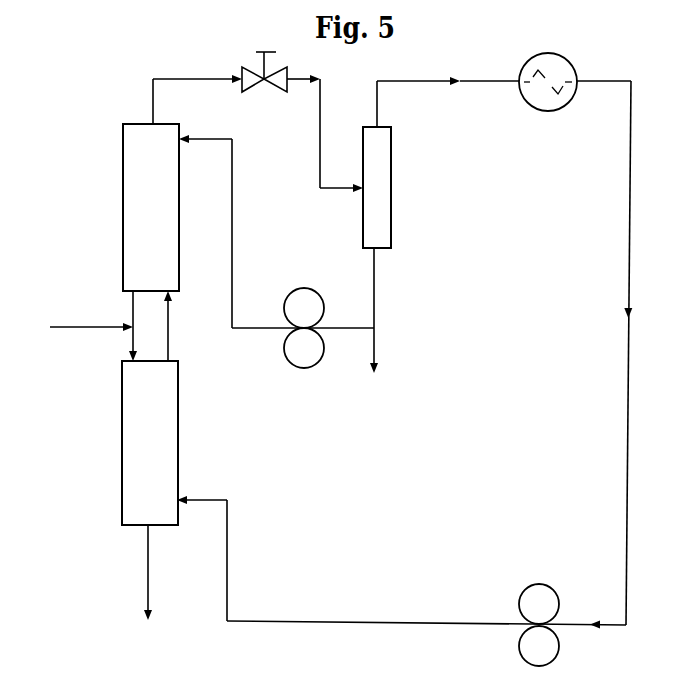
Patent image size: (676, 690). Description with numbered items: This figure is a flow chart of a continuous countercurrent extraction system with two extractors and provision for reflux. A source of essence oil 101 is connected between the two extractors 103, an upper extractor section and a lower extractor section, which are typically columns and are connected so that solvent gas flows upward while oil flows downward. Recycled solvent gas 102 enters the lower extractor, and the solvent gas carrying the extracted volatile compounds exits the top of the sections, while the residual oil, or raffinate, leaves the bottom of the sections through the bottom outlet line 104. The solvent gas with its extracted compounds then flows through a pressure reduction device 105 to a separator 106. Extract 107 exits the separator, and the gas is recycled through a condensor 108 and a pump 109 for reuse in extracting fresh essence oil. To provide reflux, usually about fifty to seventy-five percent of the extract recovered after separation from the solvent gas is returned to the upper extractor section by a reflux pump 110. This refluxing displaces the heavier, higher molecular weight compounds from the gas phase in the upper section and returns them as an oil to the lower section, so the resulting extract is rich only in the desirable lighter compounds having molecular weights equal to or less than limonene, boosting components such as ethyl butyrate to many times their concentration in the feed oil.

The source of essence oil 101 is at (78, 326).
The recycled solvent gas 102 is at (228, 535).
The extractors 103 is at (170, 203).
The product outlet line 104 is at (147, 583).
The pressure reduction device 105 is at (266, 85).
The separator 106 is at (391, 172).
The extract 107 is at (376, 352).
The condensor 108 is at (530, 104).
The pump 109 is at (521, 641).
The reflux pump 110 is at (297, 290).